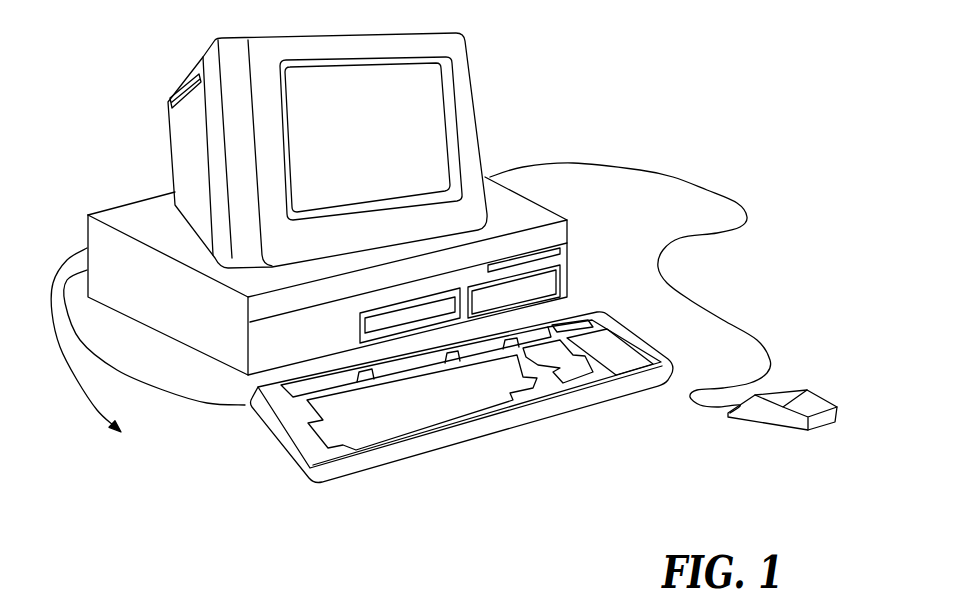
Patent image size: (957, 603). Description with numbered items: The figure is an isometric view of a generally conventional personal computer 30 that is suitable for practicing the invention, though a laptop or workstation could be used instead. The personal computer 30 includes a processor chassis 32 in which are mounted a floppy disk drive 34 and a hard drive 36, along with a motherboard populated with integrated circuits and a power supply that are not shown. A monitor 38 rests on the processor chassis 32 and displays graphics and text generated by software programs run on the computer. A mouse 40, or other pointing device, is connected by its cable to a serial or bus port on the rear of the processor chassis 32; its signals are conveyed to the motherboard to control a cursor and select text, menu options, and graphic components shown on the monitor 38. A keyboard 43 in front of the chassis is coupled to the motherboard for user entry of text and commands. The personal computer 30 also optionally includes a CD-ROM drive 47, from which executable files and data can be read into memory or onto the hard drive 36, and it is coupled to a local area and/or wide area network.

The personal computer 30 is at (460, 282).
The processor chassis 32 is at (550, 257).
The floppy disk drive 34 is at (517, 256).
The hard drive 36 is at (540, 285).
The monitor 38 is at (473, 93).
The mouse 40 is at (811, 429).
The keyboard 43 is at (560, 413).
The CD-ROM drive 47 is at (360, 332).